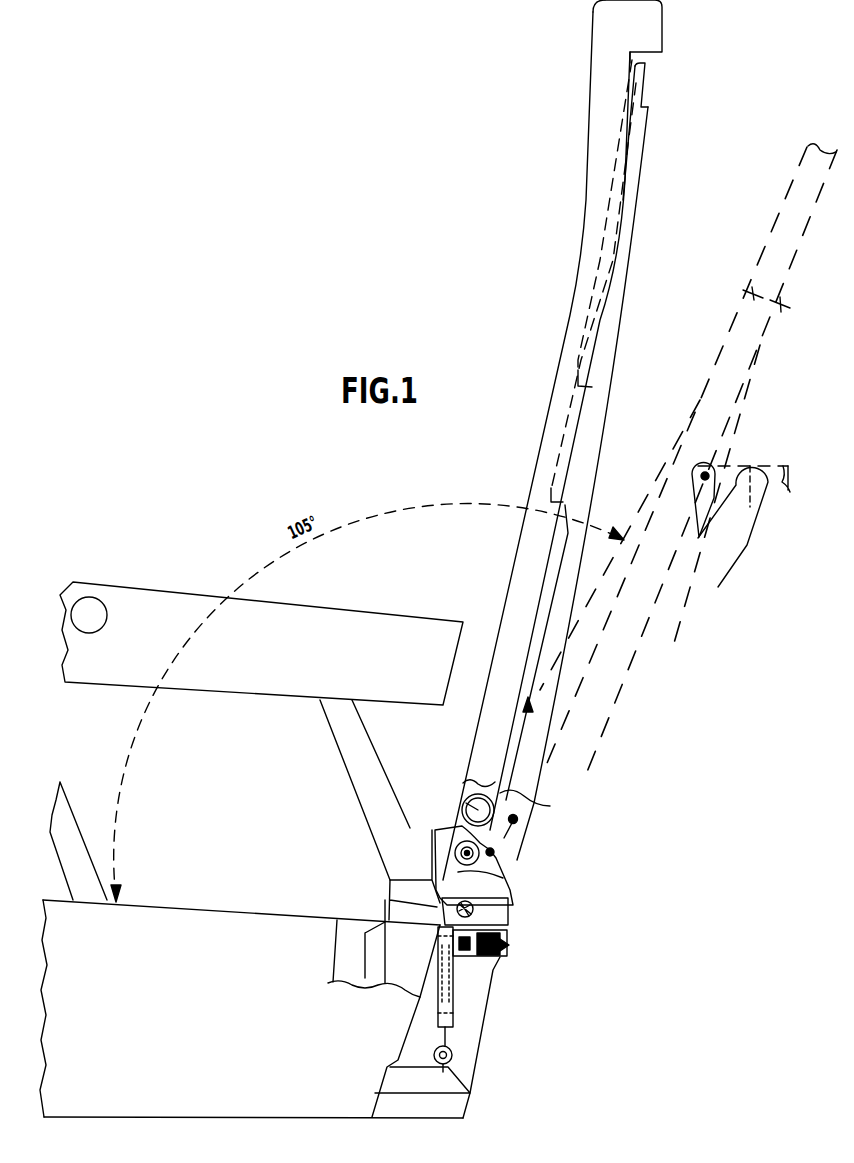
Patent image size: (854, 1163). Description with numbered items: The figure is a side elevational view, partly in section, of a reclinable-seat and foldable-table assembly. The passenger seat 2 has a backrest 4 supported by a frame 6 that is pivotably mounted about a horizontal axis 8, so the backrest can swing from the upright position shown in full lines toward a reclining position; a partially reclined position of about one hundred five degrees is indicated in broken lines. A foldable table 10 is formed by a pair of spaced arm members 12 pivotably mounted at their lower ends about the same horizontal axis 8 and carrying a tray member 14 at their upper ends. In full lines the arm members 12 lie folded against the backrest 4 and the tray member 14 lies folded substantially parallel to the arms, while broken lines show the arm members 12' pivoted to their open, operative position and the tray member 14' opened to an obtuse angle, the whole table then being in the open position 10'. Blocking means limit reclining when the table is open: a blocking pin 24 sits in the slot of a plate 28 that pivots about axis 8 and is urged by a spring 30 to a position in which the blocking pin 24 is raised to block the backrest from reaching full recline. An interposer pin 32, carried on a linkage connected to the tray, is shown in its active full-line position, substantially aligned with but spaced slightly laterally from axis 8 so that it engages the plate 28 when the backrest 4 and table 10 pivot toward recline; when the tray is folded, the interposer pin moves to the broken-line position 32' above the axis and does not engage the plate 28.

The passenger seat 2 is at (498, 270).
The backrest 4 is at (566, 313).
The frame 6 is at (462, 812).
The horizontal axis 8 is at (453, 830).
The foldable table 10 is at (654, 88).
The foldable table in open operative position 10' is at (689, 463).
The arm members 12 is at (574, 430).
The arm members in open operative position 12' is at (650, 517).
The tray member 14 is at (642, 191).
The tray member in open operative position 14' is at (752, 525).
The blocking pin 24 is at (475, 909).
The plate 28 is at (440, 840).
The spring 30 is at (453, 1000).
The interposer pin 32 is at (539, 863).
The interposer pin in inactive position 32' is at (558, 828).